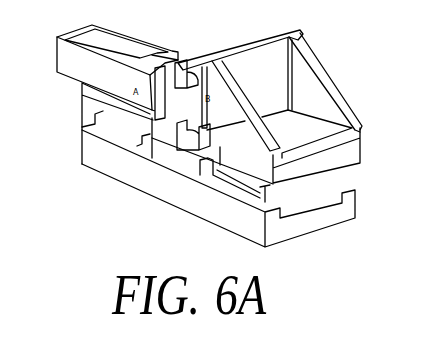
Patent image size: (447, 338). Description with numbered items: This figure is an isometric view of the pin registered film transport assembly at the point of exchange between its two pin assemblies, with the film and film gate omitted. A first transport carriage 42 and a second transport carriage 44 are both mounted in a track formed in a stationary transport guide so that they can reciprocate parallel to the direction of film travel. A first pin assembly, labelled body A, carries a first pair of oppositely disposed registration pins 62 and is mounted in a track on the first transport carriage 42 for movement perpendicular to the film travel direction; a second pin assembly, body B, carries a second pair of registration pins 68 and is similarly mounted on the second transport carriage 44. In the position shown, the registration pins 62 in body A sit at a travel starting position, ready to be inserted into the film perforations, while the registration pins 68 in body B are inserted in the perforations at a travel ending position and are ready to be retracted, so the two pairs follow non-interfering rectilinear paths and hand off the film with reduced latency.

The first transport carriage 42 is at (80, 120).
The second transport carriage 44 is at (352, 180).
The registration pins 62 is at (150, 121).
The registration pins 68 is at (177, 130).